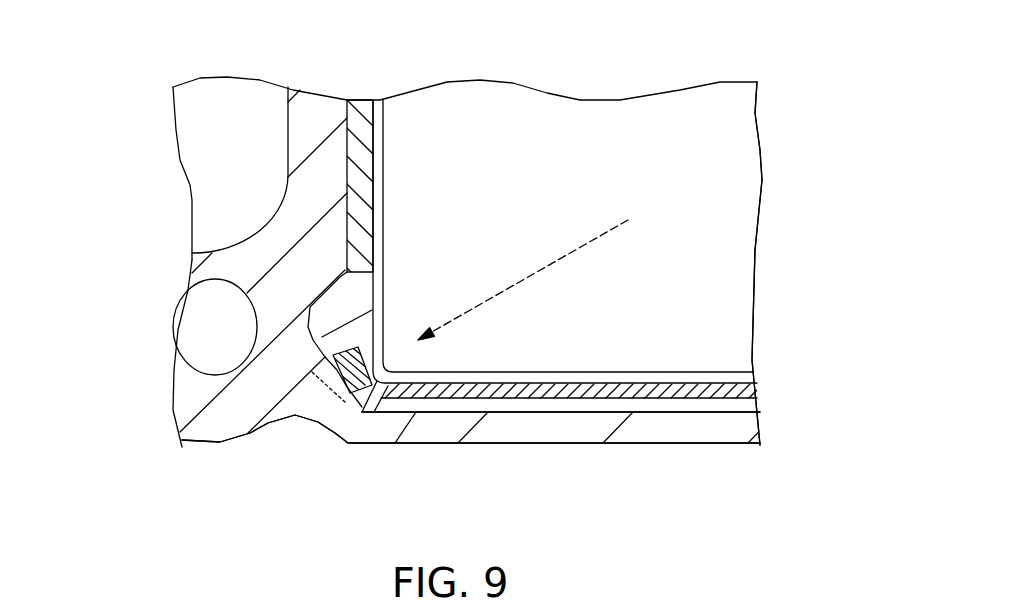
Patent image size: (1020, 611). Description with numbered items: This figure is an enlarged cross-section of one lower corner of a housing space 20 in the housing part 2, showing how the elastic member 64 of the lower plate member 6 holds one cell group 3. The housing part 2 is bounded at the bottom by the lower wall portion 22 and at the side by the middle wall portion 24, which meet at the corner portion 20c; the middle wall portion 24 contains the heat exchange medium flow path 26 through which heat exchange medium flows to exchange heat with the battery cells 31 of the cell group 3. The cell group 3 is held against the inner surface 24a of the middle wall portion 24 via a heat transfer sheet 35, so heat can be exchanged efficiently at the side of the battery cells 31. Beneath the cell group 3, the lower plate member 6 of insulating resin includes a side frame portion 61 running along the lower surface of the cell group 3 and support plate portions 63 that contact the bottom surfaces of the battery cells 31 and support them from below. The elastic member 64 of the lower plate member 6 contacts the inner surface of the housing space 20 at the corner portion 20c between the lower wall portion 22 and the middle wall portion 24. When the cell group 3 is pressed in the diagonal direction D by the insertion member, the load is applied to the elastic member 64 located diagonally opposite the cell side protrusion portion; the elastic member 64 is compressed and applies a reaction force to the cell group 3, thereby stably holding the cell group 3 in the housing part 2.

The housing part 2 is at (255, 484).
The cell group 3 is at (808, 263).
The lower plate member 6 is at (561, 469).
The housing space 20 is at (556, 459).
The corner portion 20c is at (225, 339).
The lower wall portion 22 is at (565, 468).
The middle wall portion 24 is at (226, 268).
The inner surface of the middle wall portion 24a is at (415, 157).
The heat exchange medium flow path 26 is at (183, 173).
The battery cell 31 is at (508, 261).
The heat transfer sheet 35 is at (564, 216).
The side frame portion 61 is at (395, 452).
The support plate portion 63 is at (572, 444).
The elastic member 64 is at (344, 413).
The diagonal direction D is at (523, 280).